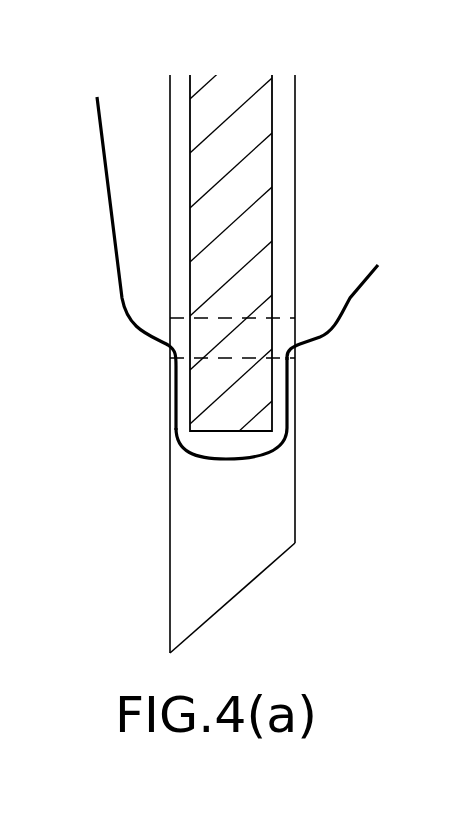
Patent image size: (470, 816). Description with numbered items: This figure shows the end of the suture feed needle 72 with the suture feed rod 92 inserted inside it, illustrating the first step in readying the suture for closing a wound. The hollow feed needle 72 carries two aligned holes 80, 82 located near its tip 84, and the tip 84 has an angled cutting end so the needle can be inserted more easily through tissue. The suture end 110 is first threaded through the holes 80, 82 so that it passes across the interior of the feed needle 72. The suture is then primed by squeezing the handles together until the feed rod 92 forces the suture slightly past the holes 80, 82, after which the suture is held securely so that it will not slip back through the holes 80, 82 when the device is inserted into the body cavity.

The suture feed needle 72 is at (297, 158).
The suture feed rod 92 is at (258, 124).
The hole 80 is at (167, 352).
The hole 82 is at (292, 355).
The suture end 110 is at (345, 307).
The needle tip 84 is at (225, 604).